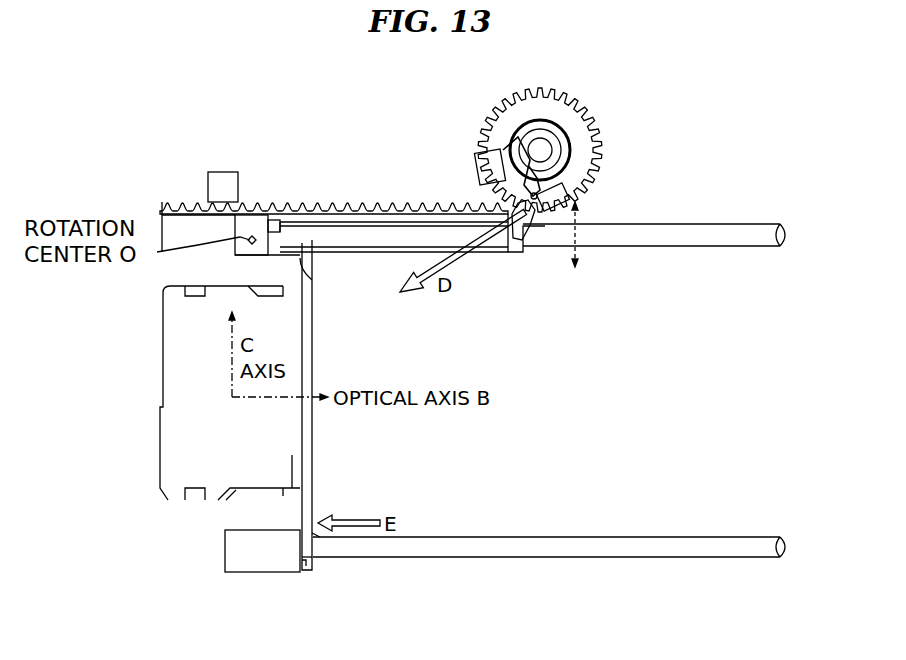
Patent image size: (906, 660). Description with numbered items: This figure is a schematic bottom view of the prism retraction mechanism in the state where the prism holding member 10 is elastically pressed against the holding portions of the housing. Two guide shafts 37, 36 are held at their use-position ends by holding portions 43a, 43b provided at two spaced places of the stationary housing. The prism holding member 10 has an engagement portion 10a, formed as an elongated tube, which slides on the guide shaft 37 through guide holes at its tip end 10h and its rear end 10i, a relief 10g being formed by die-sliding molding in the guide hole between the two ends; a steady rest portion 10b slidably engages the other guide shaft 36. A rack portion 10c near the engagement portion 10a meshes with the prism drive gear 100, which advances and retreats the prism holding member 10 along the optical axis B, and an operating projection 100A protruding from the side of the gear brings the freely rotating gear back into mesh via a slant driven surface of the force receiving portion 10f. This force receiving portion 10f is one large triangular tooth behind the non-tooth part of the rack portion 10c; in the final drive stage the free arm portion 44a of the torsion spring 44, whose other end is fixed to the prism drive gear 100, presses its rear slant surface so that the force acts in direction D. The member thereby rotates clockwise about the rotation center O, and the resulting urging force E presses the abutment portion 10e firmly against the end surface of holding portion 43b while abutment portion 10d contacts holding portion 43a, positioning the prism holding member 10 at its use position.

The prism holding member 10 is at (172, 322).
The engagement portion 10a is at (378, 262).
The steady rest portion 10b is at (317, 533).
The rack portion 10c is at (352, 202).
The abutment portion 10d is at (275, 223).
The abutment portion 10e is at (310, 557).
The force receiving portion 10f is at (532, 228).
The relief 10g is at (410, 233).
The tip end 10h is at (302, 262).
The rear end 10i is at (520, 232).
The guide shaft 36 is at (667, 537).
The guide shaft 37 is at (722, 230).
The holding portion 43a is at (252, 217).
The holding portion 43b is at (265, 560).
The torsion spring 44 is at (520, 125).
The arm portion 44a is at (568, 195).
The prism drive gear 100 is at (580, 147).
The operating projection 100A is at (478, 168).